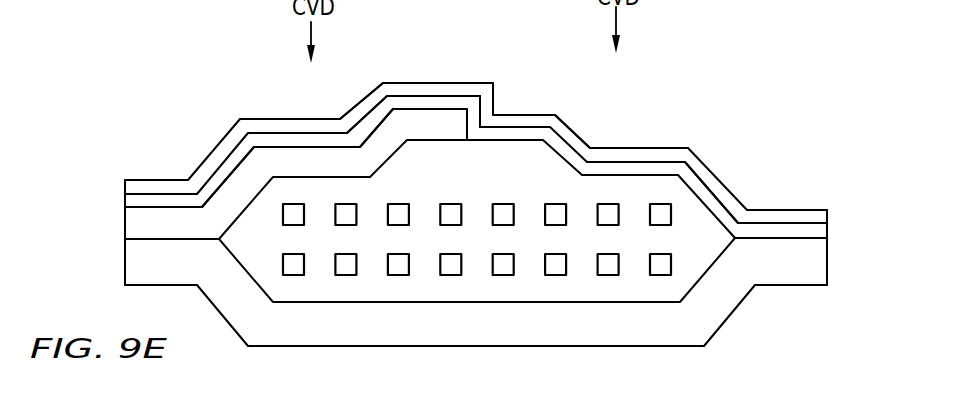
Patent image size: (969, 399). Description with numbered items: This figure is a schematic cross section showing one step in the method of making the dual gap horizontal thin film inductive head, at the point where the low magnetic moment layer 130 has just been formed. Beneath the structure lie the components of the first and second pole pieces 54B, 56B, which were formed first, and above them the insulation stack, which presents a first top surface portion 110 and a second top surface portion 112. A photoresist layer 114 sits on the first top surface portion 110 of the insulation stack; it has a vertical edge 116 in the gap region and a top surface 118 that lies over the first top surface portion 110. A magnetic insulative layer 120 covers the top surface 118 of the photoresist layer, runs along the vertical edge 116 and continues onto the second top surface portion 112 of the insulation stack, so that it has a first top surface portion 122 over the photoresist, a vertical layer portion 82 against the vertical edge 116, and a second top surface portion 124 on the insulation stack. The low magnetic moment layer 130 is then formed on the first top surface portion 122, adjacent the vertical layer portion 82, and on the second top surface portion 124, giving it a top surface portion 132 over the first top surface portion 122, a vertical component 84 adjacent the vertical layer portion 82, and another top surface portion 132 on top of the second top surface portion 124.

The first pole piece component 54B is at (292, 325).
The second pole piece component 56B is at (573, 323).
The vertical layer portion of the magnetic insulative layer 82 is at (475, 113).
The vertical component of the low magnetic moment layer 84 is at (488, 95).
The first top surface portion of the insulation stack 110 is at (297, 175).
The second top surface portion of the insulation stack 112 is at (612, 175).
The photoresist layer 114 is at (232, 192).
The vertical edge of the photoresist layer 116 is at (480, 128).
The top surface of the photoresist layer 118 is at (308, 140).
The magnetic insulative layer 120 is at (150, 172).
The first top surface portion of the magnetic insulative layer 122 is at (335, 128).
The second top surface portion of the magnetic insulative layer 124 is at (648, 162).
The low magnetic moment layer 130 is at (576, 104).
The top surface portion of the low magnetic moment layer 132 is at (292, 125).